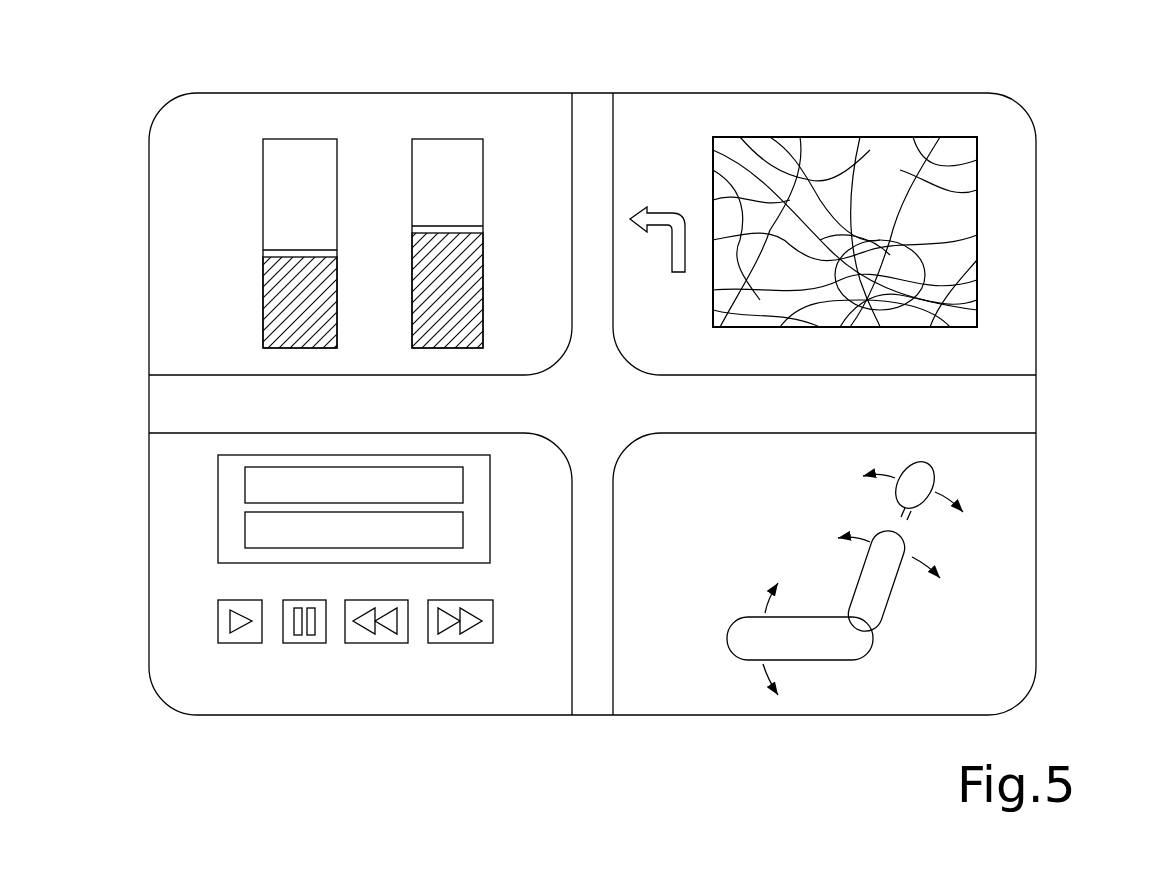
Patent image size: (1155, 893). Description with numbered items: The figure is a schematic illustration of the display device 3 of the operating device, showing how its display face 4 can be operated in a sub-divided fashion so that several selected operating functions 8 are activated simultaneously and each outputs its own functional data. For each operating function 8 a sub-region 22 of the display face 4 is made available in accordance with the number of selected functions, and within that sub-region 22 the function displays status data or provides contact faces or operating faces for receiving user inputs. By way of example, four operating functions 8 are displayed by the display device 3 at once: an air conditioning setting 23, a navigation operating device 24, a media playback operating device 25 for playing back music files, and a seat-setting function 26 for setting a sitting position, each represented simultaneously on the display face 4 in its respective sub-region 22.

The display device 3 is at (1052, 127).
The display face 4 is at (588, 118).
The operating function 8 is at (349, 118).
The sub-region 22 is at (412, 110).
The air conditioning setting 23 is at (215, 226).
The navigation operating device 24 is at (880, 115).
The media playback operating device 25 is at (238, 675).
The seat-setting function 26 is at (722, 678).